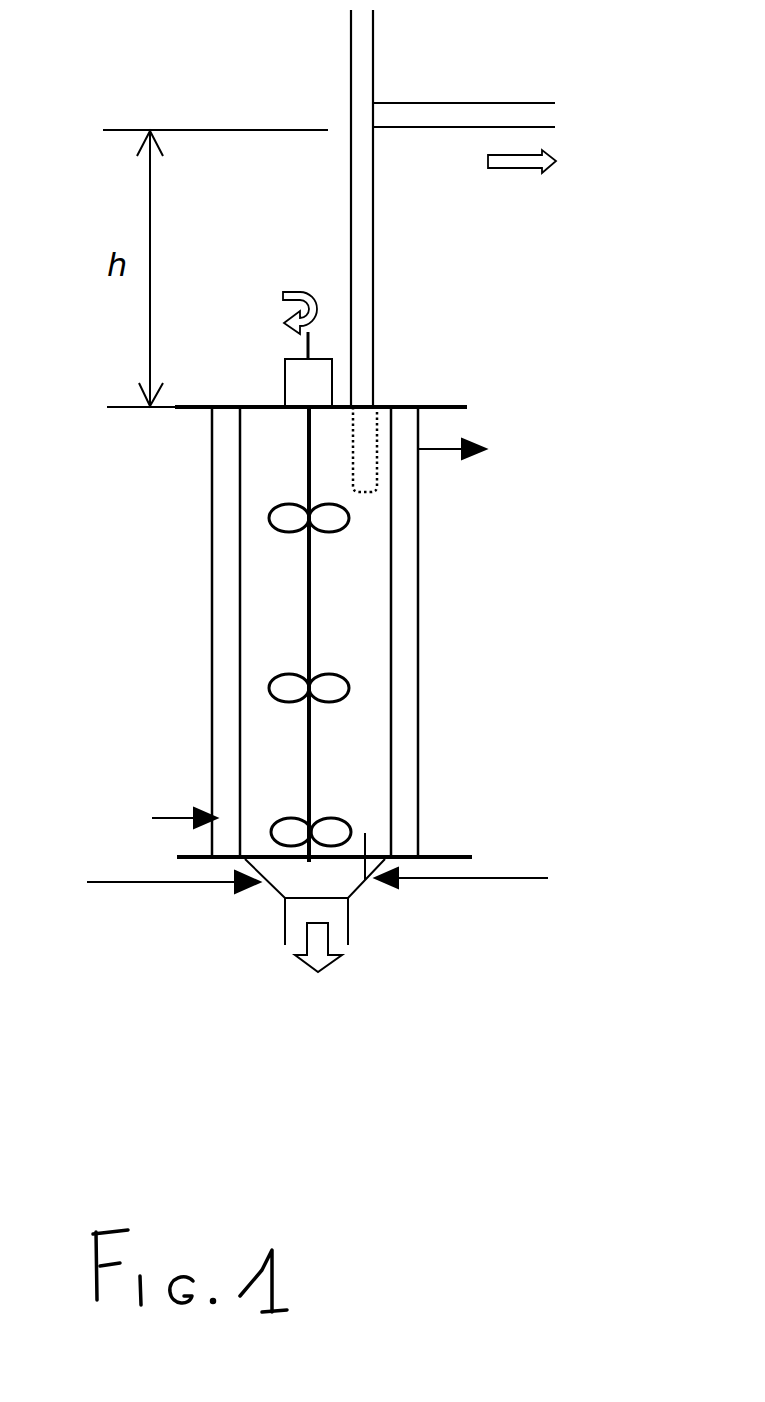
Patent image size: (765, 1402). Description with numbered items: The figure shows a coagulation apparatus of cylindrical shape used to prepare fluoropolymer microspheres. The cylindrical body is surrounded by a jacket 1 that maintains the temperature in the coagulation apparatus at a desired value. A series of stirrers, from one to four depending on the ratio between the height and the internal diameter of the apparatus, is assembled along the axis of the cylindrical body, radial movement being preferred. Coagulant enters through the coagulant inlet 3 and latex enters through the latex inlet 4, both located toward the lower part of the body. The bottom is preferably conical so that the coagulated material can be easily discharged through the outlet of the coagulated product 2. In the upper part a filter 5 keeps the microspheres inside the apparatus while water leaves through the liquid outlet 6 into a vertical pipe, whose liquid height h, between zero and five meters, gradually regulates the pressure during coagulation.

The jacket 1 is at (220, 657).
The outlet of the coagulated product 2 is at (315, 947).
The coagulant inlet 3 is at (134, 814).
The latex inlet 4 is at (356, 865).
The filter 5 is at (377, 450).
The liquid outlet 6 is at (504, 208).